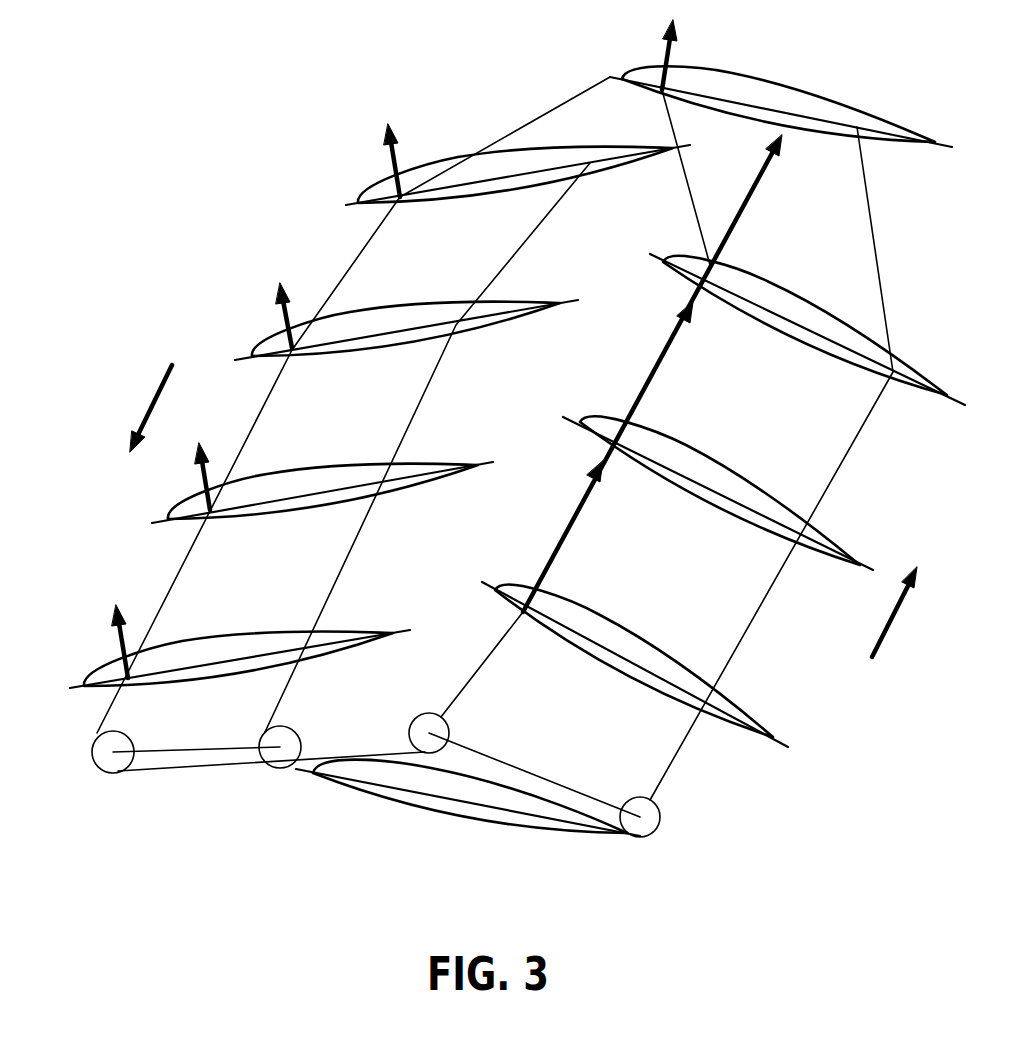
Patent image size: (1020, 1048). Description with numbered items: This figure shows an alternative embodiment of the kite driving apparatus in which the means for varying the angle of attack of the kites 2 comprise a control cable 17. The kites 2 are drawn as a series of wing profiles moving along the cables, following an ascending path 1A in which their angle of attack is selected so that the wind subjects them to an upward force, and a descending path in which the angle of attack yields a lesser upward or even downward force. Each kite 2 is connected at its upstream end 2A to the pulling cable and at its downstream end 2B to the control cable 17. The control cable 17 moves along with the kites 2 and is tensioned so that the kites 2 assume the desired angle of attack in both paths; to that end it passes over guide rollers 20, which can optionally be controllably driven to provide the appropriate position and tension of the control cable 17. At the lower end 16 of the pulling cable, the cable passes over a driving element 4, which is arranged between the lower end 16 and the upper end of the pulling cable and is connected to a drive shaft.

The kite 2 is at (268, 505).
The upstream end of kite 2A is at (600, 423).
The downstream end of kite 2B is at (828, 538).
The ascending path 1A is at (563, 525).
The driving element 4 is at (428, 717).
The lower end of pulling cable 16 is at (354, 262).
The control cable 17 is at (418, 410).
The guide roller 20 is at (287, 737).